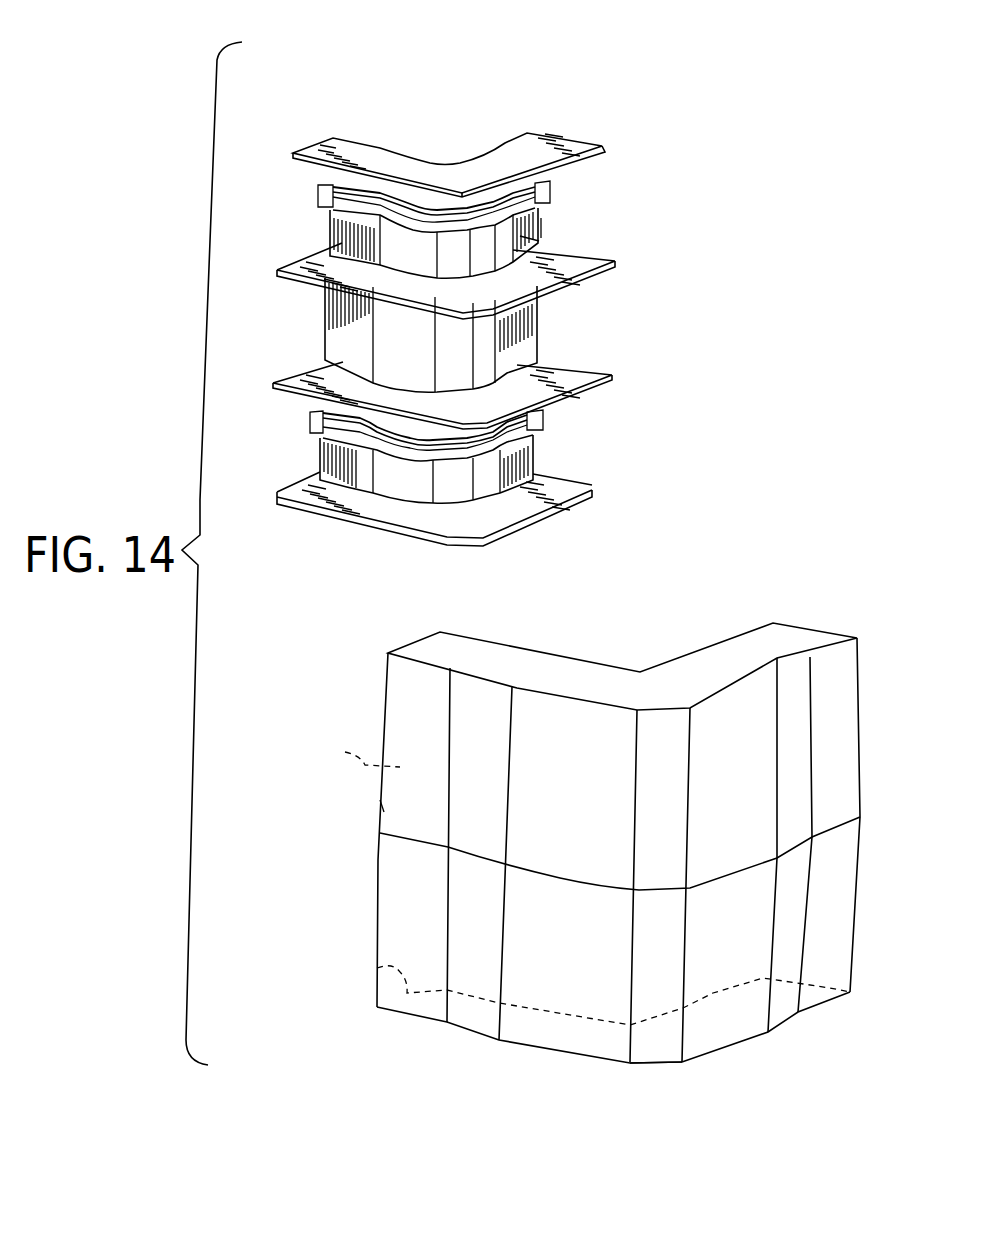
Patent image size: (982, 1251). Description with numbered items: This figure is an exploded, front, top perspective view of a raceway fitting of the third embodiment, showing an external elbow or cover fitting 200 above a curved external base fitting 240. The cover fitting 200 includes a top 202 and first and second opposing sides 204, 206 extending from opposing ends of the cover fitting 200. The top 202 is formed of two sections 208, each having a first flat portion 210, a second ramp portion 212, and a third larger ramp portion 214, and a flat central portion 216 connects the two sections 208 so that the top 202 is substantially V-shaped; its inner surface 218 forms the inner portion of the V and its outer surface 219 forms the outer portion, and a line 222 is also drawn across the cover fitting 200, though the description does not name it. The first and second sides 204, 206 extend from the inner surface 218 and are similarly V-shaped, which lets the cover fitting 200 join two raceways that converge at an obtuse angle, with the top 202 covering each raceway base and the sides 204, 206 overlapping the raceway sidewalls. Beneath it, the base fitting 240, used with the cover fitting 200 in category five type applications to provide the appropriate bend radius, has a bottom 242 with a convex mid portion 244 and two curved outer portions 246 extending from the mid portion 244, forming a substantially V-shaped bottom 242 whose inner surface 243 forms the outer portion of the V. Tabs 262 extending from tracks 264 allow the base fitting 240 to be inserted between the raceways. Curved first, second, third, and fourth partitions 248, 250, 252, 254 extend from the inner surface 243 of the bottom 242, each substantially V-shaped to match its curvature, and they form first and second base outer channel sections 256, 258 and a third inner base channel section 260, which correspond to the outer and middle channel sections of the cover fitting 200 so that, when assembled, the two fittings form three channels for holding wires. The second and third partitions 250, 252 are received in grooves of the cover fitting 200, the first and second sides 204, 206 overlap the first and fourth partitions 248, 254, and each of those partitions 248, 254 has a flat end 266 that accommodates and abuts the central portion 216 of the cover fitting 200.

The cover fitting 200 is at (508, 1096).
The top 202 is at (380, 728).
The first side 204 is at (468, 647).
The second side 206 is at (377, 968).
The section 208 is at (463, 1028).
The first flat portion 210 is at (412, 687).
The second ramp portion 212 is at (488, 720).
The third larger ramp portion 214 is at (715, 730).
The flat central portion 216 is at (652, 1048).
The inner surface 218 is at (345, 752).
The outer surface 219 is at (398, 805).
The fold line 222 is at (378, 833).
The base fitting 240 is at (497, 74).
The bottom 242 is at (543, 218).
The inner surface 243 is at (543, 238).
The convex mid portion 244 is at (407, 247).
The curved outer portion 246 is at (350, 327).
The first partition 248 is at (345, 147).
The second partition 250 is at (328, 263).
The third partition 252 is at (320, 377).
The fourth partition 254 is at (320, 492).
The first base outer channel section 256 is at (580, 190).
The second base outer channel section 258 is at (584, 461).
The third inner base channel section 260 is at (598, 310).
The tab 262 is at (318, 190).
The track 264 is at (418, 210).
The flat end 266 is at (477, 197).